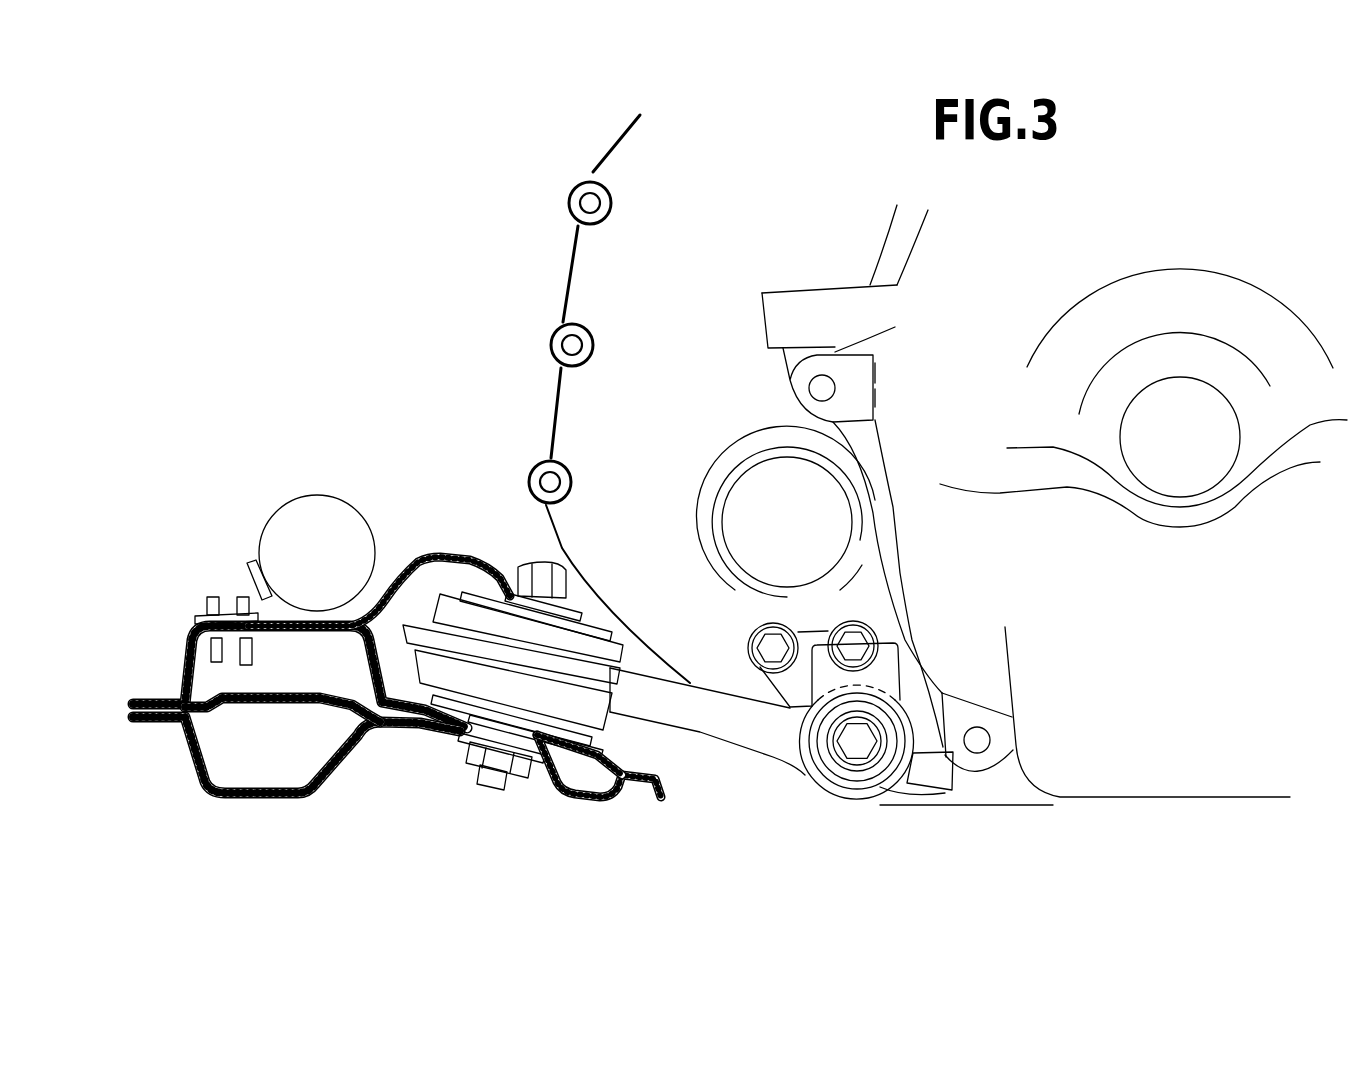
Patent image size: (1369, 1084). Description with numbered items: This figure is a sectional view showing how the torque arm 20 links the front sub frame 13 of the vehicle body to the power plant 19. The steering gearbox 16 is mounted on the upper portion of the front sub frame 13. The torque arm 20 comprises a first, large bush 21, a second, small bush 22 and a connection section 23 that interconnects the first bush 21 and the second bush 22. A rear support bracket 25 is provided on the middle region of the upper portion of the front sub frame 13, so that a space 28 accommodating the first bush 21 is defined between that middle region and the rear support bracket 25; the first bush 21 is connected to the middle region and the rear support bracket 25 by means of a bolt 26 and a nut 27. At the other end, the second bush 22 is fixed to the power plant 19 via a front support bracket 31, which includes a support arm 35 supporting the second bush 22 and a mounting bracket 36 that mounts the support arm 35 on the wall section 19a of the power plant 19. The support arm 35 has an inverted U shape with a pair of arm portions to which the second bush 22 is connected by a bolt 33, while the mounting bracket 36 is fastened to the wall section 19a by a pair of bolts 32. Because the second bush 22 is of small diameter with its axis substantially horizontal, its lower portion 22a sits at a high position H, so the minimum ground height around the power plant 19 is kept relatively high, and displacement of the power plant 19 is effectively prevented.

The front sub frame 13 is at (179, 672).
The steering gearbox 16 is at (298, 492).
The power plant 19 is at (568, 265).
The wall section 19a is at (887, 634).
The torque arm 20 is at (781, 782).
The first bush 21 is at (547, 757).
The second bush 22 is at (850, 788).
The lower portion 22a is at (850, 800).
The connection section 23 is at (755, 735).
The rear support bracket 25 is at (418, 556).
The bolt 26 is at (545, 582).
The nut 27 is at (470, 762).
The space 28 is at (383, 651).
The front support bracket 31 is at (861, 578).
The bolts 32 is at (772, 643).
The bolt 33 is at (862, 752).
The support arm 35 is at (900, 683).
The mounting bracket 36 is at (818, 634).
The high position H is at (1053, 805).